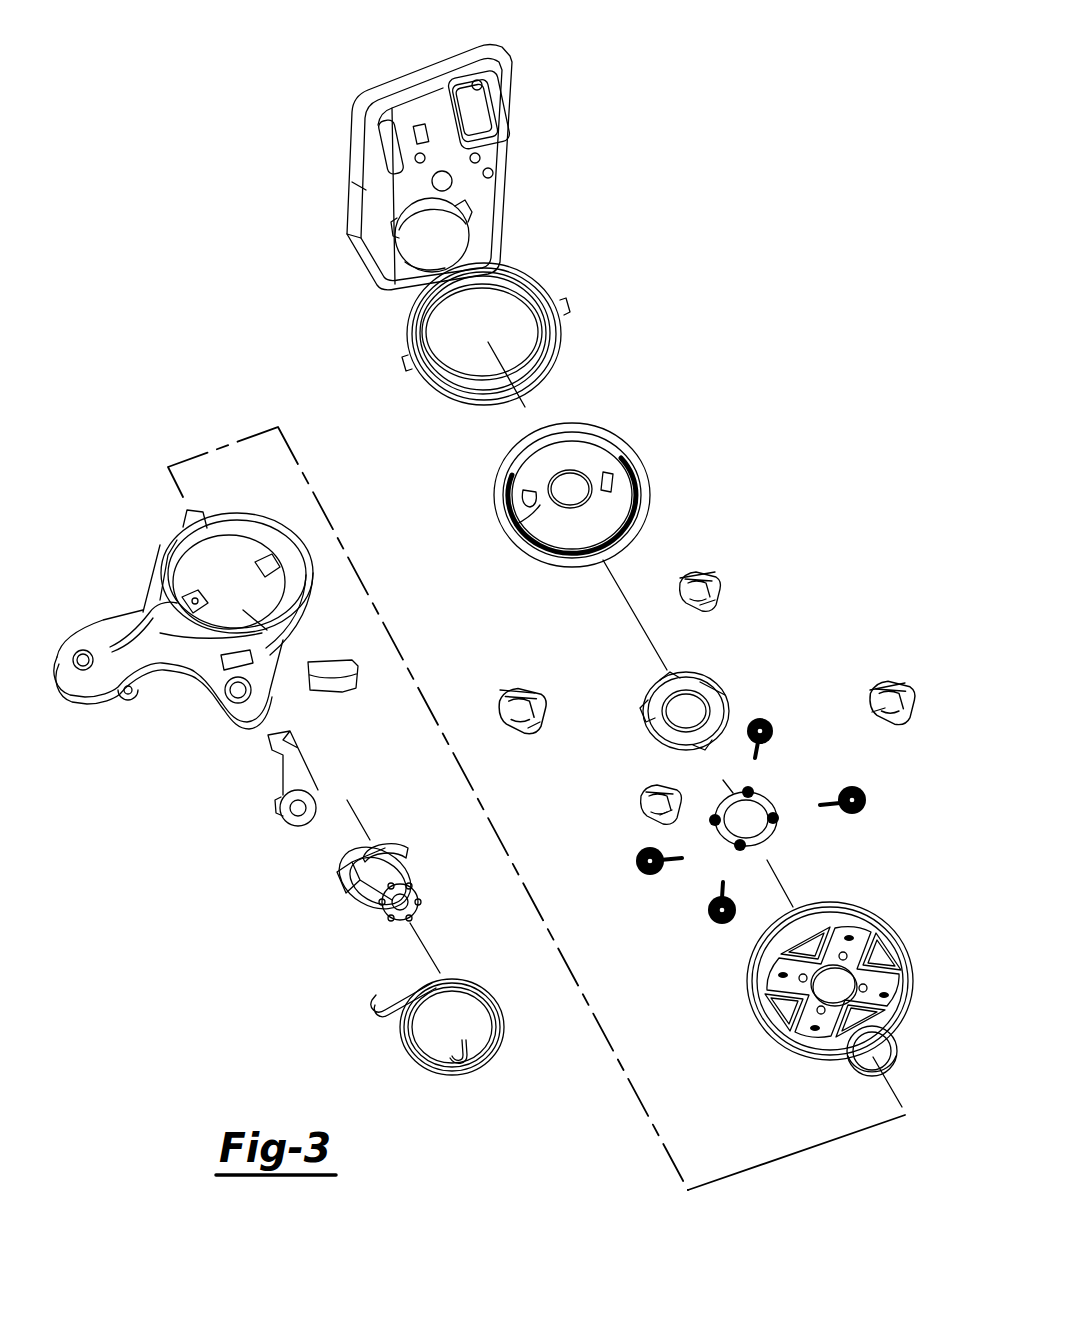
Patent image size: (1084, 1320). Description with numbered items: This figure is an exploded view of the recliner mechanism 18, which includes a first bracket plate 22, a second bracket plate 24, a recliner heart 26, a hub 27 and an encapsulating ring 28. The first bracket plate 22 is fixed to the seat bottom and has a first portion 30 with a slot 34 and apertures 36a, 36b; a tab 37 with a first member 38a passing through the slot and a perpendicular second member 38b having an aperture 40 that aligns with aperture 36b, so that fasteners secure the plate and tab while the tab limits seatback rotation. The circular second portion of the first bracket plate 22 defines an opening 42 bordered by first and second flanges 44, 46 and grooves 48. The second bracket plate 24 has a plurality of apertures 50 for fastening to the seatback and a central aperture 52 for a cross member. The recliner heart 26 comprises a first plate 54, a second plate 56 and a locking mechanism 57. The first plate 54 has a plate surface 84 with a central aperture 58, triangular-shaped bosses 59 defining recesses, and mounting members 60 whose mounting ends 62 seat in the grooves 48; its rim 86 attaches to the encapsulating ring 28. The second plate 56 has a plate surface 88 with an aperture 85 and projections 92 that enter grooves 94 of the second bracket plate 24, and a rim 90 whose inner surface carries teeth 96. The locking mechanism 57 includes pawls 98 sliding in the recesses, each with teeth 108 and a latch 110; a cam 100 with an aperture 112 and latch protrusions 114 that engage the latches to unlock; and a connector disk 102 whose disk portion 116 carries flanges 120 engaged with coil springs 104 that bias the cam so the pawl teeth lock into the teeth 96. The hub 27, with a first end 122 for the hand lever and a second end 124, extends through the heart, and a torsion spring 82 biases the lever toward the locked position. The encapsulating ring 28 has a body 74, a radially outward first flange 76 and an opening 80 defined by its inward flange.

The recliner mechanism 18 is at (692, 220).
The first bracket plate 22 is at (140, 562).
The second bracket plate 24 is at (338, 178).
The recliner heart 26 is at (648, 328).
The hub 27 is at (323, 935).
The encapsulating ring 28 is at (552, 282).
The first portion 30 is at (168, 702).
The slot 34 is at (262, 667).
The aperture 36a is at (86, 695).
The aperture 36b is at (238, 700).
The tab 37 is at (213, 812).
The first member 38a is at (300, 758).
The second member 38b is at (280, 818).
The aperture 40 is at (298, 812).
The opening 42 is at (255, 612).
The first flange 44 is at (160, 610).
The second flange 46 is at (300, 568).
The grooves 48 is at (280, 575).
The apertures 50 is at (492, 173).
The central aperture 52 is at (520, 200).
The first plate 54 is at (896, 903).
The second plate 56 is at (660, 435).
The locking mechanism 57 is at (860, 563).
The aperture 58 is at (880, 1038).
The triangular-shaped bosses 59 is at (790, 958).
The mounting members 60 is at (800, 1002).
The mounting ends 62 is at (780, 977).
The body 74 is at (522, 268).
The first flange 76 is at (563, 333).
The opening 80 is at (457, 340).
The torsion spring 82 is at (402, 1052).
The plate surface 84 is at (778, 1020).
The aperture 85 is at (572, 500).
The rim 86 is at (903, 935).
The plate surface 88 is at (520, 512).
The rim 90 is at (645, 490).
The projections 92 is at (606, 472).
The grooves 94 is at (400, 247).
The teeth 96 is at (640, 525).
The pawls 98 is at (730, 596).
The cam 100 is at (690, 662).
The connector disk 102 is at (777, 789).
The coil springs 104 is at (650, 875).
The teeth 108 is at (508, 685).
The latch 110 is at (652, 782).
The aperture 112 is at (722, 688).
The latch protrusions 114 is at (700, 715).
The disk portion 116 is at (762, 835).
The flanges 120 is at (735, 835).
The first end 122 is at (430, 905).
The second end 124 is at (385, 848).